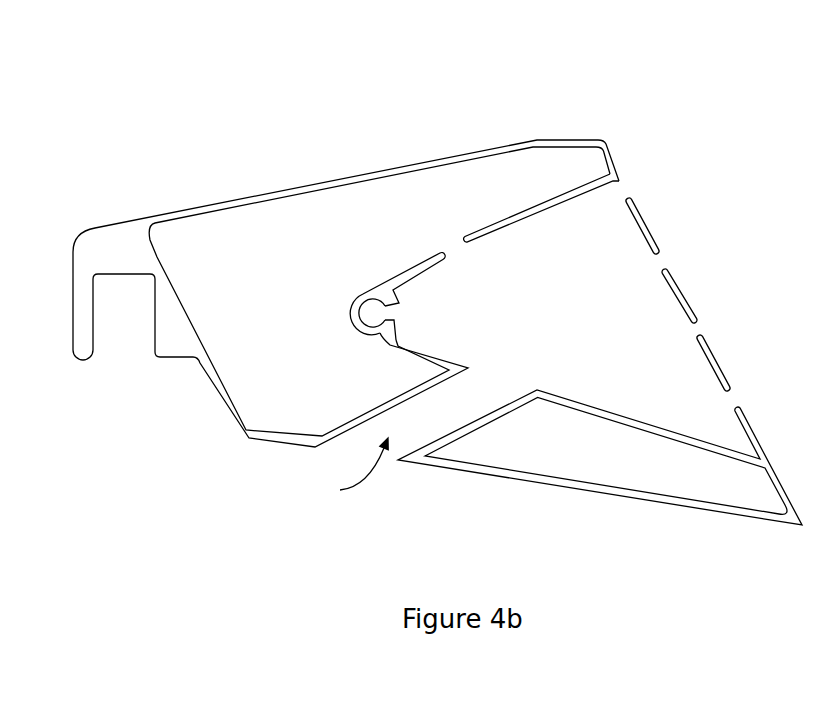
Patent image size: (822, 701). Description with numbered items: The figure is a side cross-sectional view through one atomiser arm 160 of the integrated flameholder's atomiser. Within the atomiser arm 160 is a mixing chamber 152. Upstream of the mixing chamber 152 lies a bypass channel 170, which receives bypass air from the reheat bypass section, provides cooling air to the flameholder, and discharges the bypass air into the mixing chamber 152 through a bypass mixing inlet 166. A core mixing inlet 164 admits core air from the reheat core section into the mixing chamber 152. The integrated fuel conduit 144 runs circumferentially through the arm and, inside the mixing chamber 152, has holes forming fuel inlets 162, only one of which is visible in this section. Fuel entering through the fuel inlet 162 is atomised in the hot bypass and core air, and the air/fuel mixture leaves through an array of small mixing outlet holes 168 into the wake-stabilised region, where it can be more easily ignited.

The atomiser arm 160 is at (582, 44).
The bypass channel 170 is at (291, 286).
The mixing chamber 152 is at (559, 316).
The bypass mixing inlet 166 is at (453, 248).
The mixing outlet holes 168 is at (624, 187).
The fuel inlet 162 is at (397, 310).
The fuel conduit 144 is at (363, 322).
The core mixing inlet 164 is at (342, 473).